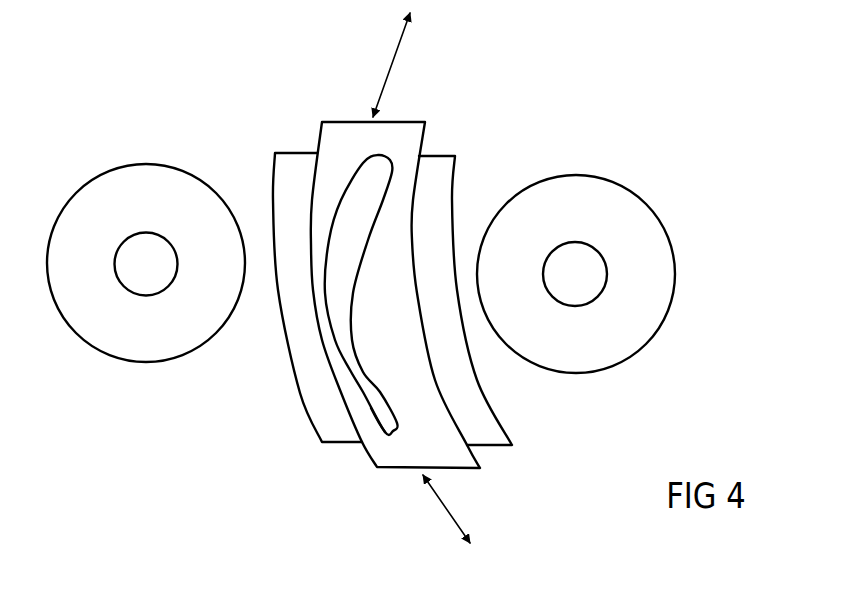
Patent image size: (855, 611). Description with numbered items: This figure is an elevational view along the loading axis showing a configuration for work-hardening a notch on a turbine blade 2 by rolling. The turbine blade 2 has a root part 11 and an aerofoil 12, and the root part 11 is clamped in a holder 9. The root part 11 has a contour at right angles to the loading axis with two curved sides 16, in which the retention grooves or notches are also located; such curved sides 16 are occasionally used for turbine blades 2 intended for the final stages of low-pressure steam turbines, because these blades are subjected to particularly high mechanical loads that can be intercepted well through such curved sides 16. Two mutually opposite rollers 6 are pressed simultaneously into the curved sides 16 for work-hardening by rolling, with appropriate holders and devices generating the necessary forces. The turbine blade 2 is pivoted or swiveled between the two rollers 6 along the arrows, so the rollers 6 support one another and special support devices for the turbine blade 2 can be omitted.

The turbine blade 2 is at (348, 120).
The rollers 6 is at (85, 207).
The holder 9 is at (300, 395).
The root part 11 is at (378, 437).
The aerofoil 12 is at (345, 267).
The curved sides 16 is at (318, 143).